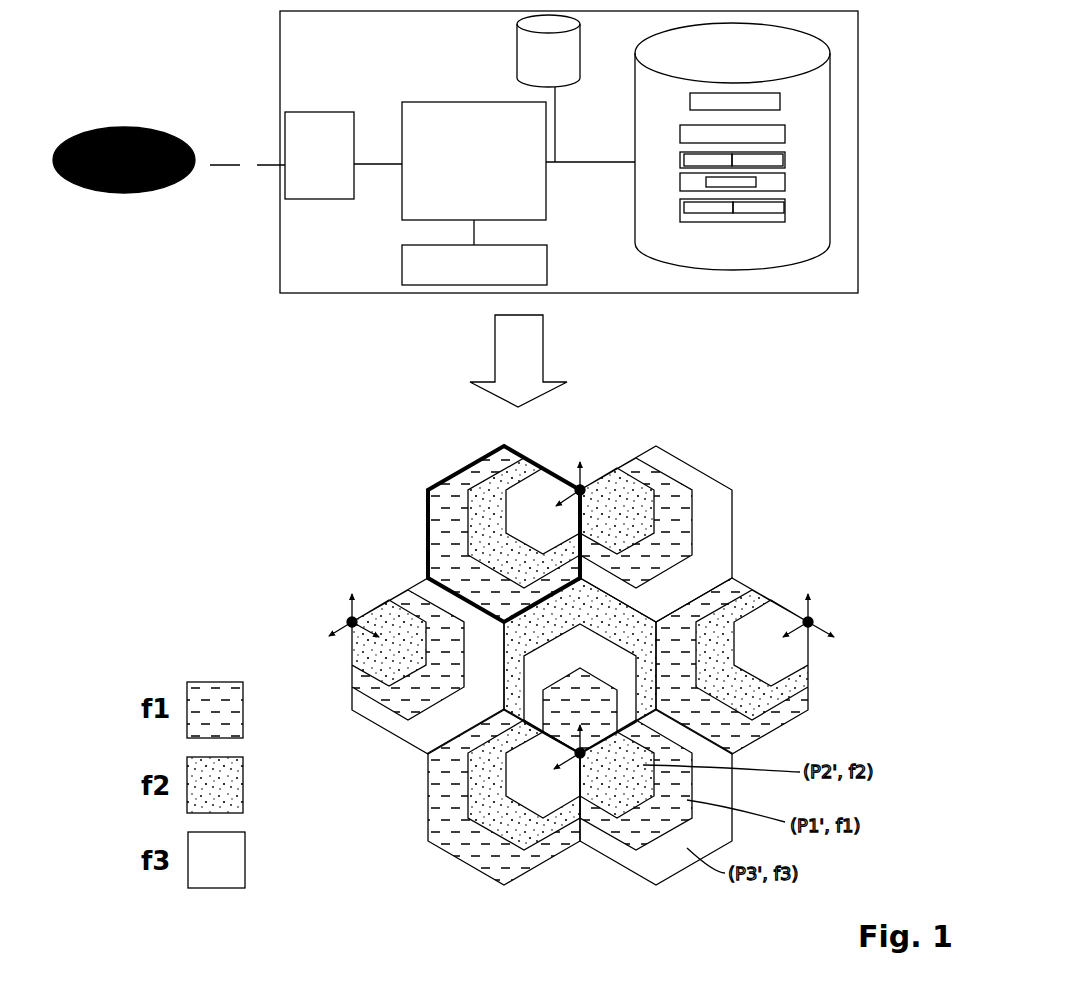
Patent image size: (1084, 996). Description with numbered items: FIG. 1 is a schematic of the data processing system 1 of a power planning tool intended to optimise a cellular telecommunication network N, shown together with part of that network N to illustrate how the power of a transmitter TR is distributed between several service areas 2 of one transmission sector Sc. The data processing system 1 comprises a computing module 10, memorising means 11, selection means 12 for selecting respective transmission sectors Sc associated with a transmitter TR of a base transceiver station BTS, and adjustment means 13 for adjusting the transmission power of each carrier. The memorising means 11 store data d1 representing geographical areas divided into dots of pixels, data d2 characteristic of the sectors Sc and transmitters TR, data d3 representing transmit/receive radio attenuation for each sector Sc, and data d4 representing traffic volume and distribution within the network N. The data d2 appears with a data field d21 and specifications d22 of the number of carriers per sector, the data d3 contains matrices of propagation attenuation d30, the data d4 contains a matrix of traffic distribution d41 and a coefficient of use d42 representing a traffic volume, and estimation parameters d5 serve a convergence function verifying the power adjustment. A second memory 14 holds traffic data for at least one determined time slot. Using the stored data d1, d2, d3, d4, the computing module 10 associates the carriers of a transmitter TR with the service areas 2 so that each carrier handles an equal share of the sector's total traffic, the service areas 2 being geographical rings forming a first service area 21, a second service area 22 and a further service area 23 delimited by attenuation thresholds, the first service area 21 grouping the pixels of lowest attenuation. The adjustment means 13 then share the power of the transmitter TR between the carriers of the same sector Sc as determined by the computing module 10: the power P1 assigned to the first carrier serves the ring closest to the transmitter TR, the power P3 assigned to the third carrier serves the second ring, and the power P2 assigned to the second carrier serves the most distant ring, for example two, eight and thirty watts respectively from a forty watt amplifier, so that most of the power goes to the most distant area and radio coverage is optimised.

The data processing system 1 is at (255, 100).
The cellular telecommunication network N is at (110, 127).
The computing module 10 is at (418, 125).
The memorising means 11 is at (632, 75).
The selection means 12 is at (423, 268).
The adjustment means 13 is at (300, 183).
The second memory 14 is at (525, 60).
The data representing geographical areas d1 is at (782, 133).
The data characteristic of sectors and transmitters d2 is at (782, 162).
The data field d21 is at (692, 163).
The specifications of the number of carriers per sector d22 is at (742, 157).
The data representing transmit/receive radio attenuation d3 is at (782, 184).
The matrices of propagation attenuation d30 is at (717, 182).
The data representing traffic volume and distribution d4 is at (782, 220).
The matrix of traffic distribution d41 is at (697, 210).
The coefficient of use d42 is at (747, 210).
The estimation parameters d5 is at (780, 100).
The service areas 2 is at (733, 557).
The transmission sector Sc is at (428, 487).
The transmitter TR is at (553, 505).
The base transceiver station BTS is at (343, 617).
The first service area 21 is at (547, 795).
The second service area 22 is at (525, 813).
The service area 23 is at (485, 830).
The power assigned to carrier C1 P1 is at (253, 725).
The power assigned to carrier C2 P2 is at (253, 793).
The power assigned to carrier C3 P3 is at (253, 866).